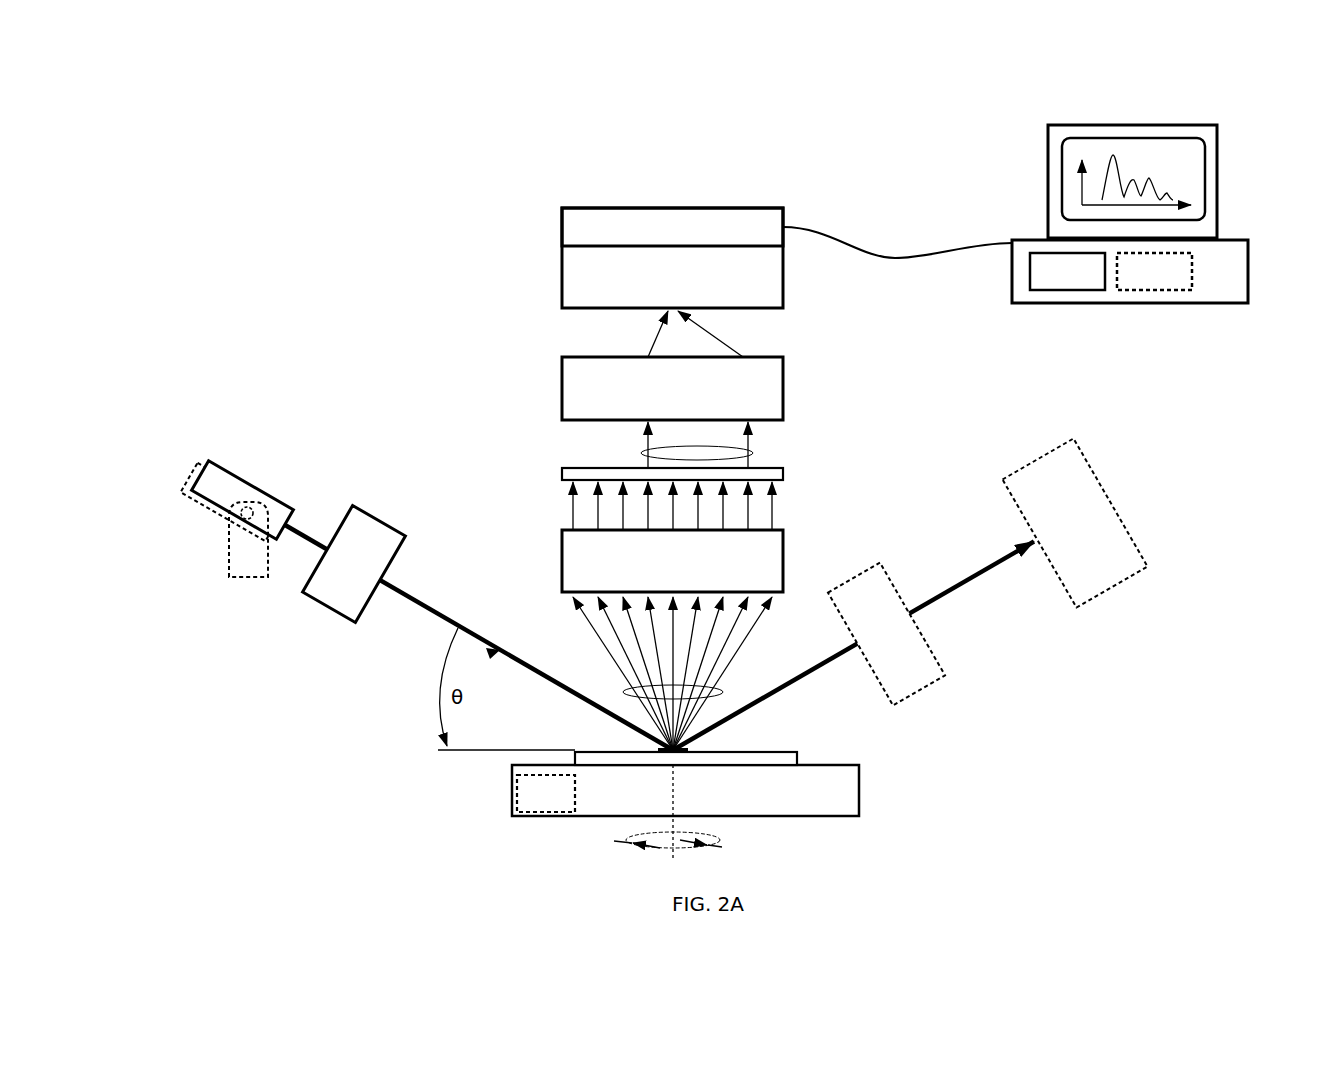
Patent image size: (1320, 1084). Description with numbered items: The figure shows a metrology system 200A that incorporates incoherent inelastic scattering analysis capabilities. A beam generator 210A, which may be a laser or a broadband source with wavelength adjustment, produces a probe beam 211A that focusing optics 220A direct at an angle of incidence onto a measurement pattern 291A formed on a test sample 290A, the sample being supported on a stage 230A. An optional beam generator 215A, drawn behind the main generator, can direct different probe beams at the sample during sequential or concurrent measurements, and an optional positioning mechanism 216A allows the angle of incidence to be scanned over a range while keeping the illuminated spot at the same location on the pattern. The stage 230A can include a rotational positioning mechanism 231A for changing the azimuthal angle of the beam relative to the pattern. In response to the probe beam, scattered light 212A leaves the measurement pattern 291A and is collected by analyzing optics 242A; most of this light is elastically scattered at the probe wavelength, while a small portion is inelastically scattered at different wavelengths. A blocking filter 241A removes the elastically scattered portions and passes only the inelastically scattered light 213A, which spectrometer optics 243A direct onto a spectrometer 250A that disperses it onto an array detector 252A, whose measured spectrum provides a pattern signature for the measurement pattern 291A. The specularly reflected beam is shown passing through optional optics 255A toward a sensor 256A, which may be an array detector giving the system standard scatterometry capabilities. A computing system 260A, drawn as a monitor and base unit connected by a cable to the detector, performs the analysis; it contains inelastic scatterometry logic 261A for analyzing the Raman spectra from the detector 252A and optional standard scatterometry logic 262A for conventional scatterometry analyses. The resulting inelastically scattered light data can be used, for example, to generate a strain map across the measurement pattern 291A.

The metrology system 200A is at (288, 242).
The beam generator 210A is at (244, 471).
The probe beam 211A is at (494, 656).
The scattered light 212A is at (625, 690).
The inelastically scattered light 213A is at (643, 451).
The optional beam generator 215A is at (180, 462).
The optional positioning mechanism 216A is at (253, 580).
The focusing optics 220A is at (326, 605).
The stage 230A is at (845, 808).
The rotational positioning mechanism 231A is at (519, 804).
The blocking filter 241A is at (784, 477).
The analyzing optics 242A is at (650, 587).
The spectrometer optics 243A is at (740, 415).
The spectrometer 250A is at (650, 301).
The array detector 252A is at (753, 239).
The optional optics 255A is at (912, 644).
The sensor 256A is at (1097, 536).
The computing system 260A is at (983, 280).
The inelastic scatterometry logic 261A is at (1057, 292).
The standard scatterometry logic 262A is at (1180, 292).
The test sample 290A is at (573, 757).
The measurement pattern 291A is at (670, 755).